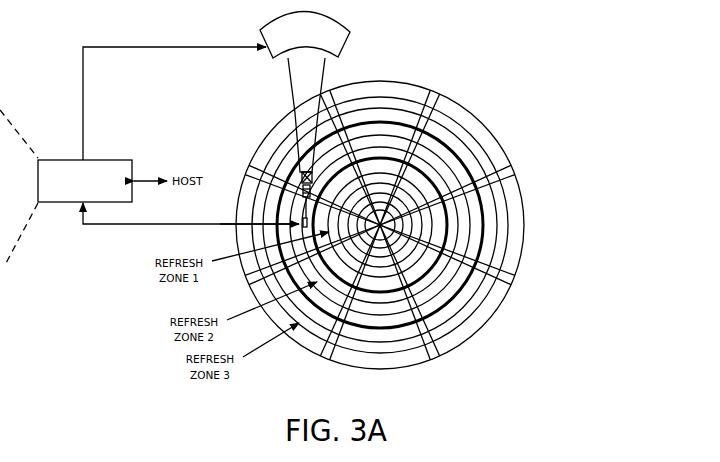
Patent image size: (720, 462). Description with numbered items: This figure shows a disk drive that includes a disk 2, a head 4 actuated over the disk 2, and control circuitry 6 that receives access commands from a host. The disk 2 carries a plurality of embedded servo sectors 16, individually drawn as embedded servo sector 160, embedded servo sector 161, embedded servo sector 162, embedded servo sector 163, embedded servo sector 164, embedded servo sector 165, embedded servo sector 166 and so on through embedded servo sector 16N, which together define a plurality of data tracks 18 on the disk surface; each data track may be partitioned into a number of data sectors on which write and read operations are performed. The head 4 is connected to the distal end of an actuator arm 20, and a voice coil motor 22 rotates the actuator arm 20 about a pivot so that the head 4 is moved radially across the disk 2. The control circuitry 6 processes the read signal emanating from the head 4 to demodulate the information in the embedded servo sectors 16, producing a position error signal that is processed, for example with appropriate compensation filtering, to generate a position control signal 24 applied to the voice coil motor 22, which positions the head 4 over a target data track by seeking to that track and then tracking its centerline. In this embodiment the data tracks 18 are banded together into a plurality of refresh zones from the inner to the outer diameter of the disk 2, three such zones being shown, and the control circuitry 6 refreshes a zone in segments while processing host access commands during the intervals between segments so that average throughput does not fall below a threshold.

The disk 2 is at (479, 112).
The head 4 is at (302, 228).
The control circuitry 6 is at (112, 160).
The embedded servo sectors 16 is at (382, 231).
The embedded servo sector 160 is at (440, 95).
The embedded servo sector 161 is at (513, 169).
The embedded servo sector 162 is at (514, 284).
The embedded servo sector 163 is at (429, 363).
The embedded servo sector 164 is at (325, 357).
The embedded servo sector 165 is at (247, 281).
The embedded servo sector 166 is at (252, 162).
The embedded servo sector 16N is at (331, 95).
The data tracks 18 is at (381, 98).
The actuator arm 20 is at (293, 95).
The voice coil motor 22 is at (273, 58).
The position control signal 24 is at (80, 95).